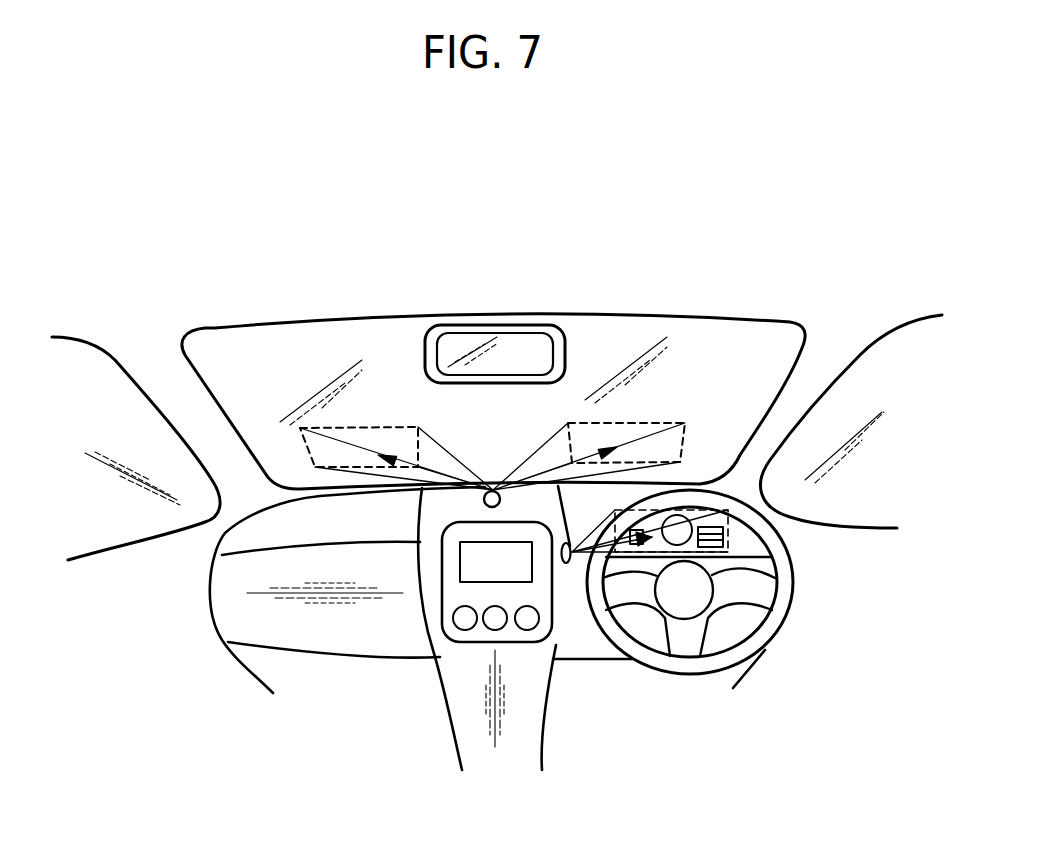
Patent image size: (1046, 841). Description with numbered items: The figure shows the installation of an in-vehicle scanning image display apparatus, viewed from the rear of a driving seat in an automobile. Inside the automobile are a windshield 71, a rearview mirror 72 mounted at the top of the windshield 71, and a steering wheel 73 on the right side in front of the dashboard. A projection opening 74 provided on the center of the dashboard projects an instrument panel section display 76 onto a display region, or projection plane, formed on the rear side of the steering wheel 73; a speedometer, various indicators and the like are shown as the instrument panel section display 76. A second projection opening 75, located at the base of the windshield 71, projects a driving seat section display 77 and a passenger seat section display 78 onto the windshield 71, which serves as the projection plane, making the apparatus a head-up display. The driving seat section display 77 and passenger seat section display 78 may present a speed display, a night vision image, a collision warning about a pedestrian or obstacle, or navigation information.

The windshield 71 is at (680, 333).
The rearview mirror 72 is at (503, 352).
The steering wheel 73 is at (768, 612).
The projection opening 74 is at (570, 560).
The projection opening 75 is at (493, 490).
The instrument panel section display 76 is at (720, 540).
The driving seat section display 77 is at (662, 450).
The passenger seat section display 78 is at (353, 442).